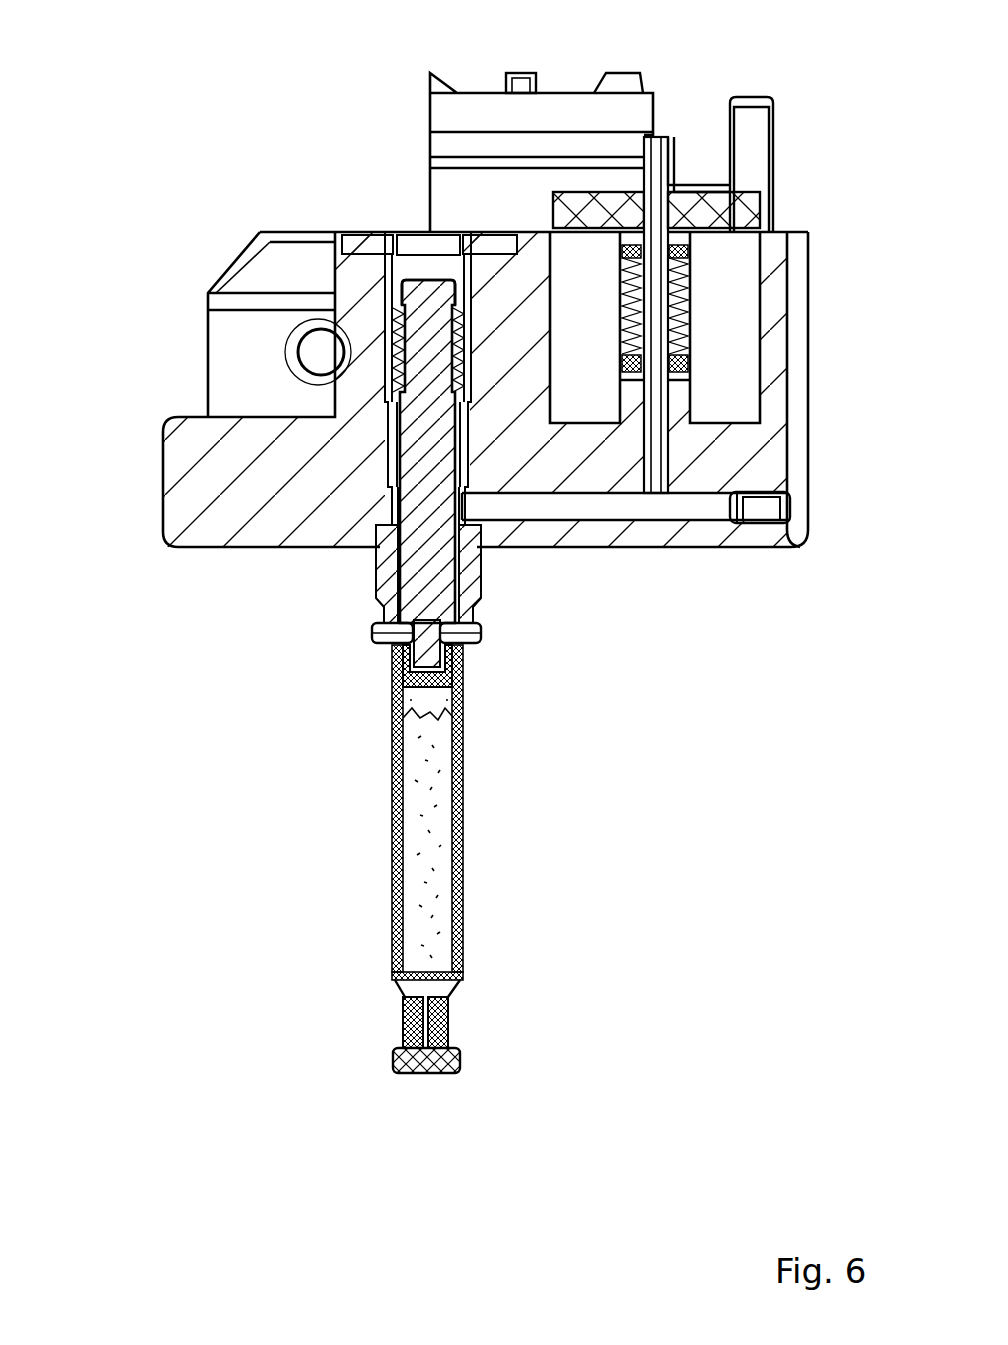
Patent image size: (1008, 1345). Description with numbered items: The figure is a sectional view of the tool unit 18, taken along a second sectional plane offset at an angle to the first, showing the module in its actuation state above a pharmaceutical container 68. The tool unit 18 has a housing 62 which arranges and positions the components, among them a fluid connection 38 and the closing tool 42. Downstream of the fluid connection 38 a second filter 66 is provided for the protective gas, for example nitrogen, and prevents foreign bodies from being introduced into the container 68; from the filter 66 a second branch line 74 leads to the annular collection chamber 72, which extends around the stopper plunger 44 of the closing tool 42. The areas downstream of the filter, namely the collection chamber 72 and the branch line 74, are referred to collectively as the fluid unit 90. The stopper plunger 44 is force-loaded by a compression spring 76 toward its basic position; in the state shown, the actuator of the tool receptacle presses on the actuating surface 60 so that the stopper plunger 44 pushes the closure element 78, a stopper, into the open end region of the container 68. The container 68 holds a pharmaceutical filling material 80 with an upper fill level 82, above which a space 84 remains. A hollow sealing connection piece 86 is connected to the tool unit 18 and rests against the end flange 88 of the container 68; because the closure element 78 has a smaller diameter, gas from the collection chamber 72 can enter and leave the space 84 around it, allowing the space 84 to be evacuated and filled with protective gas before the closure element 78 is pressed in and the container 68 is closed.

The tool unit 18 is at (150, 220).
The fluid connection 38 is at (657, 133).
The second filter 66 is at (697, 180).
The actuating surface 60 is at (421, 279).
The compression spring 76 is at (285, 352).
The housing 62 is at (162, 482).
The stopper plunger 44 is at (432, 440).
The collection chamber 72 is at (392, 522).
The closing tool 42 is at (353, 597).
The sealing connection piece 86 is at (482, 582).
The end flange 88 is at (482, 635).
The closure element 78 is at (463, 672).
The second branch line 74 is at (597, 507).
The fluid unit 90 is at (710, 566).
The space 84 is at (423, 695).
The fill level 82 is at (423, 757).
The pharmaceutical filling material 80 is at (420, 808).
The pharmaceutical container 68 is at (460, 830).